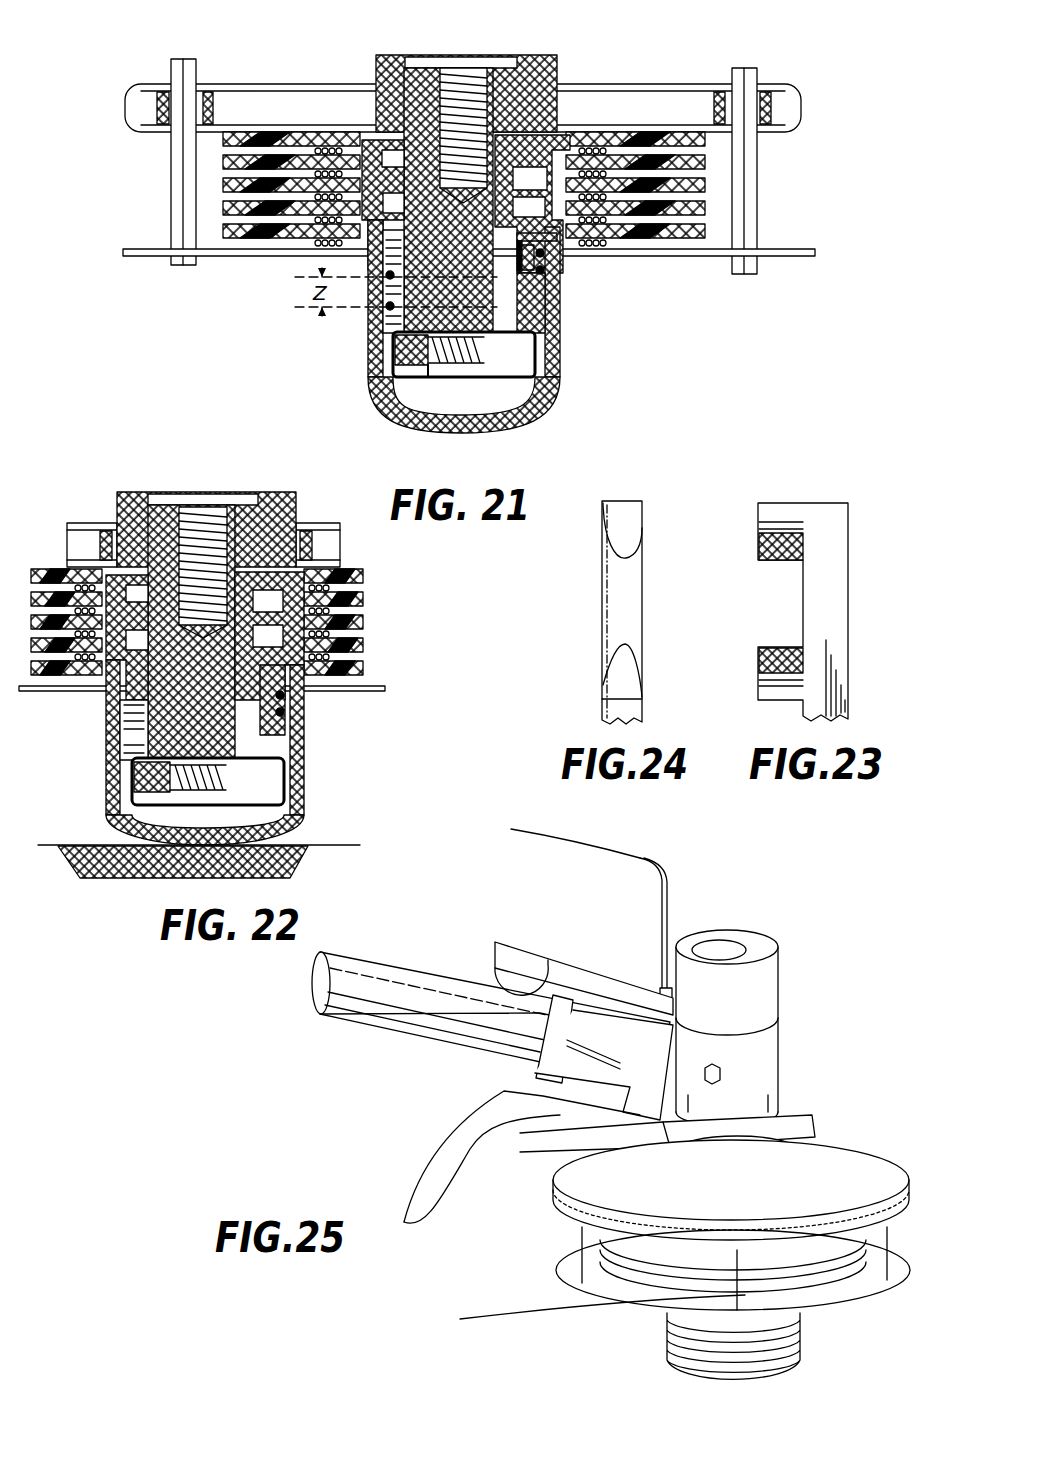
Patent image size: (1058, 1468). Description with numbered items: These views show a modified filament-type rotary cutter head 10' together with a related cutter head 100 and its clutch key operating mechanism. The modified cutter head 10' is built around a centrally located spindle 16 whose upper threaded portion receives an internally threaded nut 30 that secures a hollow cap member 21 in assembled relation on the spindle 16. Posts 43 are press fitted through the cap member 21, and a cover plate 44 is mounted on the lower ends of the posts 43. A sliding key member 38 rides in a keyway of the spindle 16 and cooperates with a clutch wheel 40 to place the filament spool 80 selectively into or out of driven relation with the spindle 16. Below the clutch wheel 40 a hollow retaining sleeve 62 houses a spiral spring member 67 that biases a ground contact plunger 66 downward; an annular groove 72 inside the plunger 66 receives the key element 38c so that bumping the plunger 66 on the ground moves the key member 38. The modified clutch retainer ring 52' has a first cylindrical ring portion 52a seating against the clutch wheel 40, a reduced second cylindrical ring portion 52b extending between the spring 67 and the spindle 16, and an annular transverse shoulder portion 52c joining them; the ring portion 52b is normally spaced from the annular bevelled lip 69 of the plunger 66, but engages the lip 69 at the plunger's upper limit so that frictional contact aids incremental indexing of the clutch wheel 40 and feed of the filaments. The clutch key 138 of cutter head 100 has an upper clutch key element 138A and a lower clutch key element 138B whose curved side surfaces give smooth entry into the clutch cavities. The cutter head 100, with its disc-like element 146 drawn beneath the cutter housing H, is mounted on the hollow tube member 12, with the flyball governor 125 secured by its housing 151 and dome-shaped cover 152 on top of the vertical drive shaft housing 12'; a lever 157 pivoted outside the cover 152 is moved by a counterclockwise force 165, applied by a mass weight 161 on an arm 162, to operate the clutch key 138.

In FIG. 21, the modified cutter head 10' is at (679, 32).
In FIG. 22, the modified cutter head 10' is at (72, 471).
In FIG. 25, the hollow tube member 12 is at (491, 1024).
In FIG. 25, the vertical drive shaft housing 12' is at (808, 1028).
In FIG. 21, the spindle 16 is at (420, 60).
In FIG. 22, the spindle 16 is at (152, 521).
In FIG. 21, the hollow cap member 21 is at (244, 83).
In FIG. 22, the hollow cap member 21 is at (321, 523).
In FIG. 21, the internally threaded nut 30 is at (557, 72).
In FIG. 22, the internally threaded nut 30 is at (296, 502).
In FIG. 21, the sliding key member 38 is at (498, 140).
In FIG. 22, the sliding key member 38 is at (246, 573).
In FIG. 21, the key element 38c is at (530, 300).
In FIG. 21, the clutch wheel 40 is at (566, 132).
In FIG. 22, the clutch wheel 40 is at (367, 609).
In FIG. 21, the post 43 is at (171, 175).
In FIG. 21, the cover plate 44 is at (125, 256).
In FIG. 21, the modified clutch retainer ring 52' is at (569, 274).
In FIG. 22, the modified clutch retainer ring 52' is at (319, 700).
In FIG. 21, the first cylindrical ring portion 52a is at (570, 262).
In FIG. 21, the second cylindrical ring portion 52b is at (563, 275).
In FIG. 21, the annular transverse shoulder portion 52c is at (575, 270).
In FIG. 21, the retaining sleeve 62 is at (555, 330).
In FIG. 22, the retaining sleeve 62 is at (300, 775).
In FIG. 21, the ground contact plunger 66 is at (540, 400).
In FIG. 22, the ground contact plunger 66 is at (288, 817).
In FIG. 21, the spiral spring member 67 is at (560, 295).
In FIG. 21, the annular bevelled lip 69 is at (535, 345).
In FIG. 22, the annular bevelled lip 69 is at (275, 744).
In FIG. 21, the annular groove 72 is at (400, 324).
In FIG. 21, the filament spool 80 is at (705, 168).
In FIG. 22, the filament spool 80 is at (360, 575).
In FIG. 25, the cutter head 100 is at (817, 1098).
In FIG. 25, the flyball governor 125 is at (781, 974).
In FIG. 24, the clutch key 138 is at (605, 609).
In FIG. 23, the clutch key 138 is at (848, 592).
In FIG. 24, the upper clutch key element 138A is at (625, 548).
In FIG. 23, the upper clutch key element 138A is at (778, 548).
In FIG. 24, the lower clutch key element 138B is at (619, 667).
In FIG. 23, the lower clutch key element 138B is at (778, 663).
In FIG. 25, the serrated disc 146 is at (834, 1141).
In FIG. 25, the housing 151 is at (759, 933).
In FIG. 25, the dome-shaped cover 152 is at (773, 947).
In FIG. 25, the lever 157 is at (657, 906).
In FIG. 25, the mass weight 161 is at (501, 964).
In FIG. 25, the arm 162 is at (581, 964).
In FIG. 25, the arrow indicating counterclockwise force 165 is at (552, 836).
In FIG. 25, the cutter housing H is at (426, 1183).